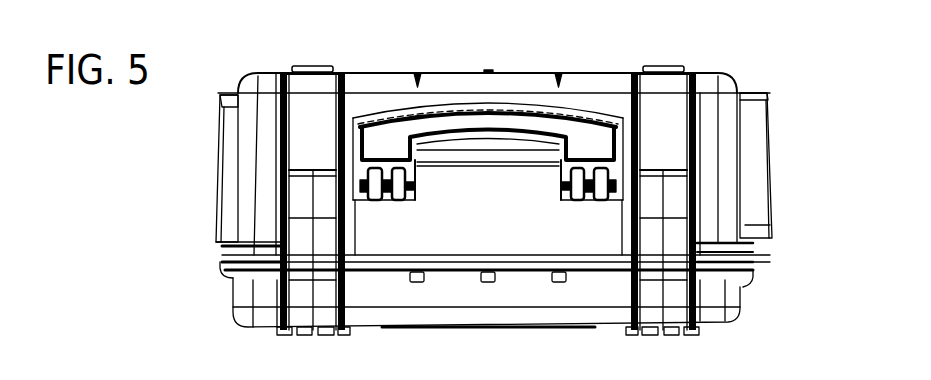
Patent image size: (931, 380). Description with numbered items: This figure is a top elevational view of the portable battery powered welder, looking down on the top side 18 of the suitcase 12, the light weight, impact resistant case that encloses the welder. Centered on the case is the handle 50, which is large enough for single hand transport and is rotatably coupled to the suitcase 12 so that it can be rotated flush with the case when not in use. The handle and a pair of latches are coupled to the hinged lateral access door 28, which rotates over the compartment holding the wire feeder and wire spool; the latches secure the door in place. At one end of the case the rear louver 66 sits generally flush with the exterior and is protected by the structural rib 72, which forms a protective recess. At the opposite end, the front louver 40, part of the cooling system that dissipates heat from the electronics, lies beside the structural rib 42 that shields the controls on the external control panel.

The suitcase 12 is at (598, 73).
The top side 18 is at (501, 229).
The lateral access door 28 is at (607, 327).
The front louver 40 is at (773, 168).
The structural rib 42 is at (753, 93).
The handle 50 is at (507, 122).
The rear louver 66 is at (218, 165).
The structural rib 72 is at (233, 93).